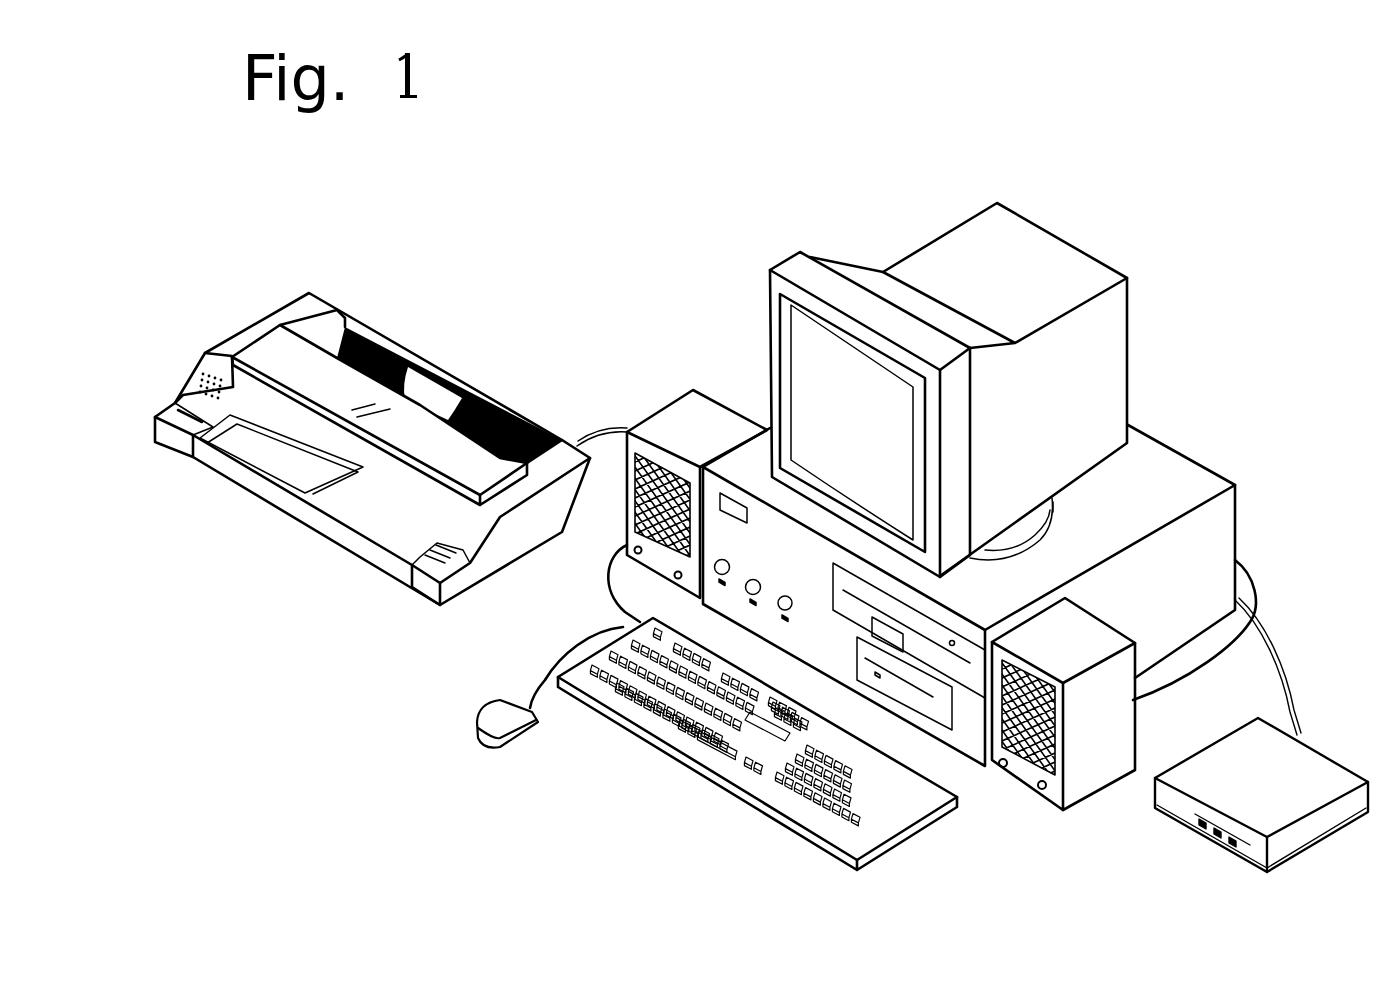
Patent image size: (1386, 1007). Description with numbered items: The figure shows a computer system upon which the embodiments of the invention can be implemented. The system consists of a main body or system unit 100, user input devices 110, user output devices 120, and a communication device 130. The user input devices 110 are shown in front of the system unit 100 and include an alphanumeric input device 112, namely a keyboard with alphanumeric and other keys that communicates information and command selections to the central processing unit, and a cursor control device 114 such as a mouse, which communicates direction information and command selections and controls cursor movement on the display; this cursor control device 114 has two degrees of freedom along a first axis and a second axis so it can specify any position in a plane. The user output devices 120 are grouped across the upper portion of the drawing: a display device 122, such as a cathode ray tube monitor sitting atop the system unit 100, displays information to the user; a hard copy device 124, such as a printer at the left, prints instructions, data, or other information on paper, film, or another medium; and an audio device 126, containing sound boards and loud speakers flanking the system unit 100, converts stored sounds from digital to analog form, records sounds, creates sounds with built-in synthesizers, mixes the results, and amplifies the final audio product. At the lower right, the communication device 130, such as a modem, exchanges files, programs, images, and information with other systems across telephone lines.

The main body or system unit 100 is at (1180, 441).
The user input devices 110 is at (717, 721).
The alphanumeric input device 112 is at (660, 747).
The cursor control device 114 is at (640, 834).
The user output devices 120 is at (645, 506).
The display device 122 is at (763, 371).
The hard copy device 124 is at (496, 387).
The audio device 126 is at (642, 396).
The communication device 130 is at (1168, 832).